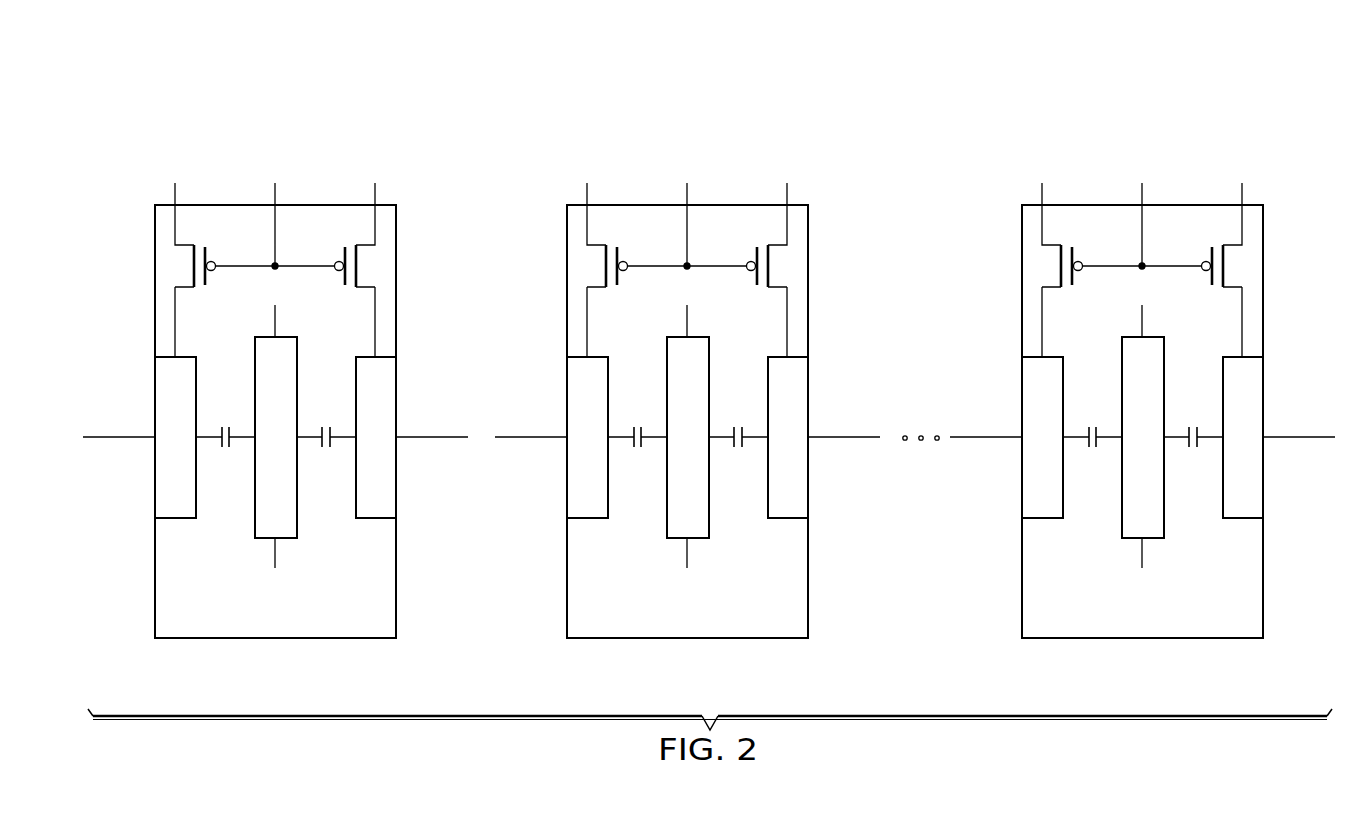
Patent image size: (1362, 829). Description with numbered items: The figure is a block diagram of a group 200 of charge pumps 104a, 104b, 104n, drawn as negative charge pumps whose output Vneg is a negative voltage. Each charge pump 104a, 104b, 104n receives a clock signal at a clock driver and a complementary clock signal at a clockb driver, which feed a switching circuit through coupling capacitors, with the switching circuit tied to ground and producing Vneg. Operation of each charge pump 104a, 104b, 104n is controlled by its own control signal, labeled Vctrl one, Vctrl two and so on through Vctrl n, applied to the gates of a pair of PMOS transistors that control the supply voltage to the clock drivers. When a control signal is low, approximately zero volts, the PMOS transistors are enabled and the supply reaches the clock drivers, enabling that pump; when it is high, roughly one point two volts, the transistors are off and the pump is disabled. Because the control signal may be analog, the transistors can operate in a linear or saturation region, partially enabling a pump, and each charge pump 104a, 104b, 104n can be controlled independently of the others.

The group of charge pumps 200 is at (437, 123).
The charge pump 104a is at (245, 642).
The charge pump 104b is at (657, 642).
The charge pump 104n is at (1185, 641).